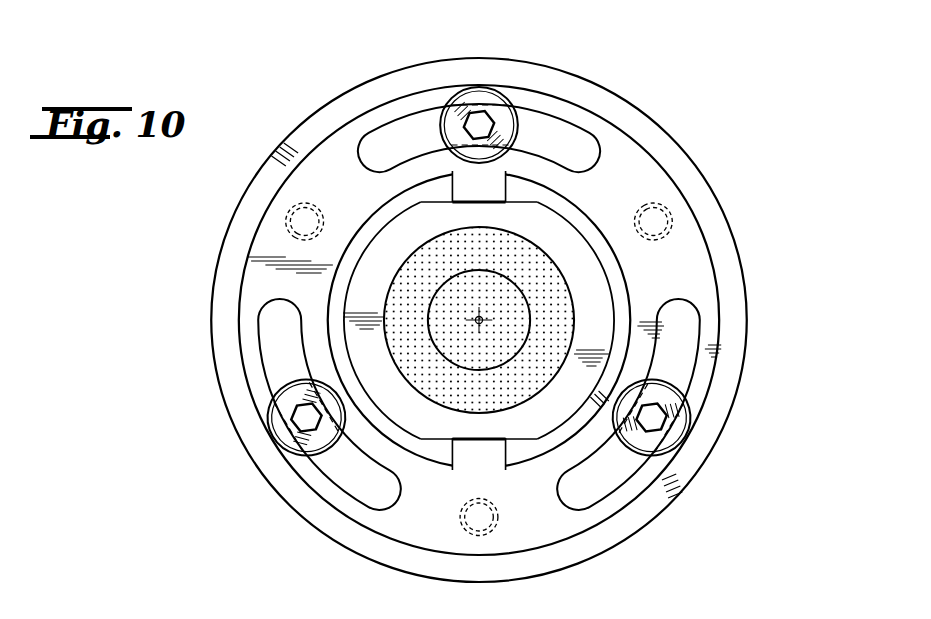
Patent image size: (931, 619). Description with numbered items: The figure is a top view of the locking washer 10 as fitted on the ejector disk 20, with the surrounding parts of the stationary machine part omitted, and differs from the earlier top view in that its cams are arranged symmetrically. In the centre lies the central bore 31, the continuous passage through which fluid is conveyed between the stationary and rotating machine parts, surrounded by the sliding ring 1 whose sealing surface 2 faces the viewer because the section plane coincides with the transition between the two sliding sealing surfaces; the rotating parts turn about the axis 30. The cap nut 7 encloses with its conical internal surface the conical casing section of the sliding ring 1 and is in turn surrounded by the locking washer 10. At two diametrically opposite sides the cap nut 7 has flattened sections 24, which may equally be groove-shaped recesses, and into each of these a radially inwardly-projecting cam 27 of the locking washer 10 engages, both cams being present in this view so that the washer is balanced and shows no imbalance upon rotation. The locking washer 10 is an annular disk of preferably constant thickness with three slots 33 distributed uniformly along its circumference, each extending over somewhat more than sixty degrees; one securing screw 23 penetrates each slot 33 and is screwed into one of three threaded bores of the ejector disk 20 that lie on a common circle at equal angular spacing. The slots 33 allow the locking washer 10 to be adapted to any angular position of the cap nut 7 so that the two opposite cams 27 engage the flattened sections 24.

The sliding ring 1 is at (578, 307).
The sealing surface 2 is at (546, 271).
The cap nut 7 is at (412, 413).
The locking washer 10 is at (697, 205).
The ejector disk 20 is at (657, 142).
The securing screw 23 is at (685, 420).
The flattened section 24 is at (447, 200).
The cam 27 is at (488, 185).
The axis 30 is at (474, 316).
The central bore 31 is at (492, 361).
The slot 33 is at (433, 118).